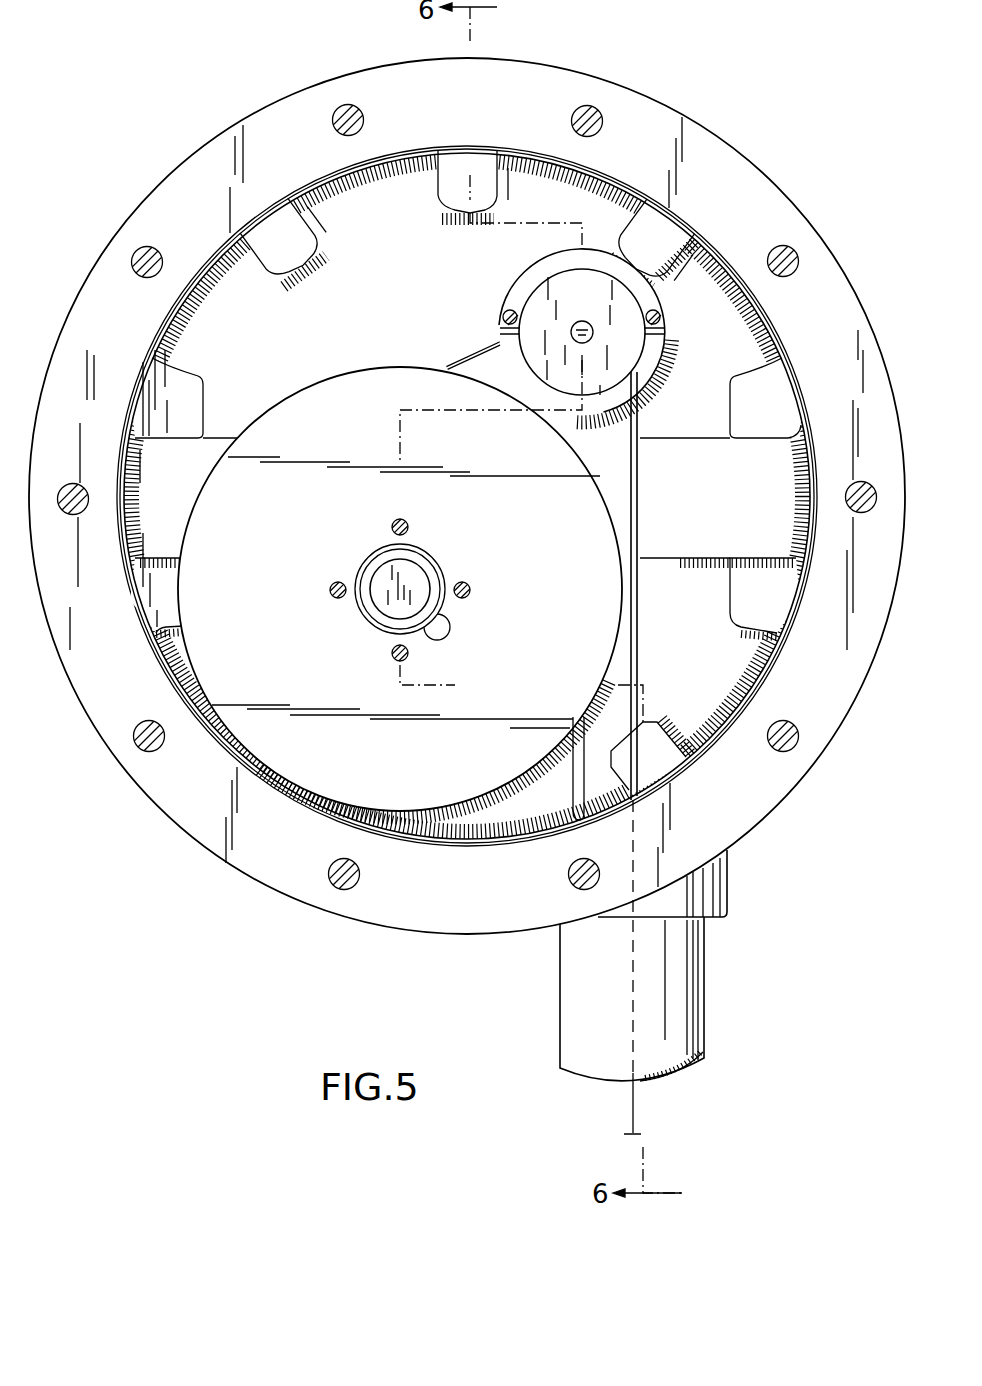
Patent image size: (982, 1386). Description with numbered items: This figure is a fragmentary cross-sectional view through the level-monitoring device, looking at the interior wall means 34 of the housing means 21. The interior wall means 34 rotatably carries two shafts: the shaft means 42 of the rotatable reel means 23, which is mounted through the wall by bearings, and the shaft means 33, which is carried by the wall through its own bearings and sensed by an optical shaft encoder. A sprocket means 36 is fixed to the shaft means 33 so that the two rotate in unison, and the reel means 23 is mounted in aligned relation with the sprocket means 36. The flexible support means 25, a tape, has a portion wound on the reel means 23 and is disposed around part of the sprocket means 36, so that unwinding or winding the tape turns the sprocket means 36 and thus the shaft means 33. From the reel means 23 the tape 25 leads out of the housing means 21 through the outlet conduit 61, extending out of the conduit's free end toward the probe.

The housing means 21 is at (187, 833).
The rotatable reel means 23 is at (331, 378).
The flexible support means 25 is at (643, 488).
The shaft means 33 is at (584, 320).
The interior wall means 34 is at (436, 328).
The sprocket means 36 is at (535, 308).
The shaft means 42 is at (419, 578).
The outlet conduit 61 is at (703, 986).